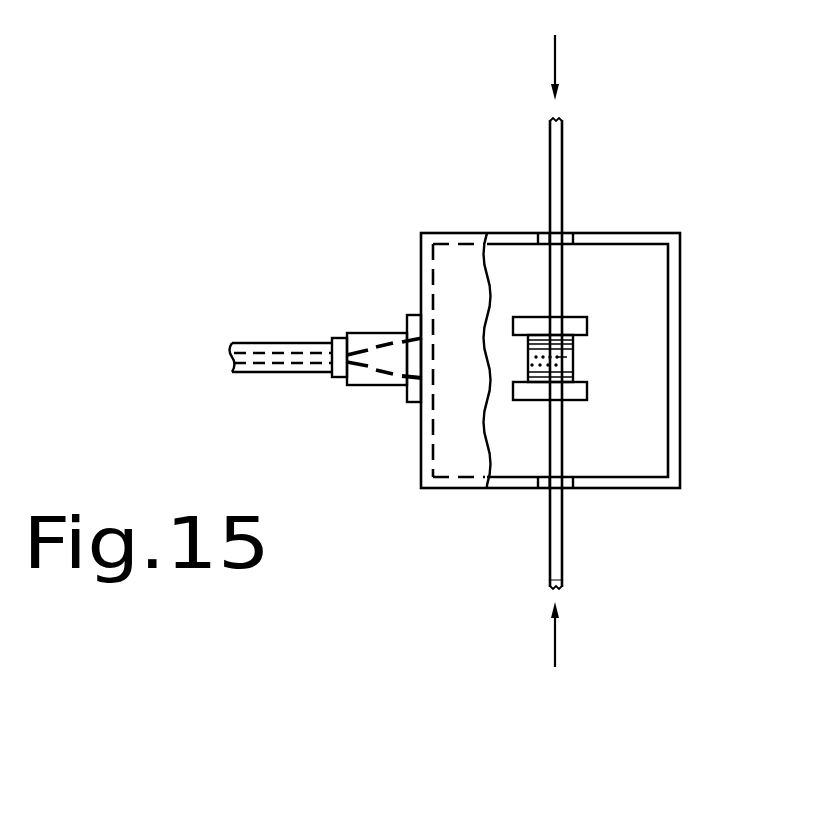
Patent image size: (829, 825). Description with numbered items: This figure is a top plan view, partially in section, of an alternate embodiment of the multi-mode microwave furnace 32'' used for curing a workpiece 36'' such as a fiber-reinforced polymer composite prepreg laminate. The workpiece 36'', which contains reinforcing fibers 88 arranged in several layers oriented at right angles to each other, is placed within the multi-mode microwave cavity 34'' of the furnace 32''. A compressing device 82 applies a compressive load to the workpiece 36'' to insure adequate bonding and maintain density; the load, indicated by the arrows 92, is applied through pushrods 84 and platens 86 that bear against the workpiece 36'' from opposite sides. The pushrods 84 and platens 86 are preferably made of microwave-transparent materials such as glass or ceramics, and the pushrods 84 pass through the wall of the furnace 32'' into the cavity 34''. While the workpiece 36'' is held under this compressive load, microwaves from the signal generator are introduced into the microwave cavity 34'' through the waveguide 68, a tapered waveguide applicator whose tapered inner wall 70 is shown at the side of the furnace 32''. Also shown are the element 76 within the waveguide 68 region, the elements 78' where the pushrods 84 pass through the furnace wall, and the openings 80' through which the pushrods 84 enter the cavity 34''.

The multi-mode microwave furnace 32'' is at (616, 360).
The multi-mode microwave cavity 34'' is at (629, 360).
The workpiece 36'' is at (599, 390).
The waveguide 68 is at (349, 387).
The tapered inner wall 70 is at (378, 373).
The conductors 76 is at (372, 350).
The bushing 78' is at (618, 387).
The aperture 80' is at (487, 341).
The compressing device 82 is at (566, 580).
The pushrods 84 is at (562, 163).
The platens 86 is at (573, 317).
The reinforcing fibers 88 is at (567, 357).
The arrows 92 is at (555, 52).